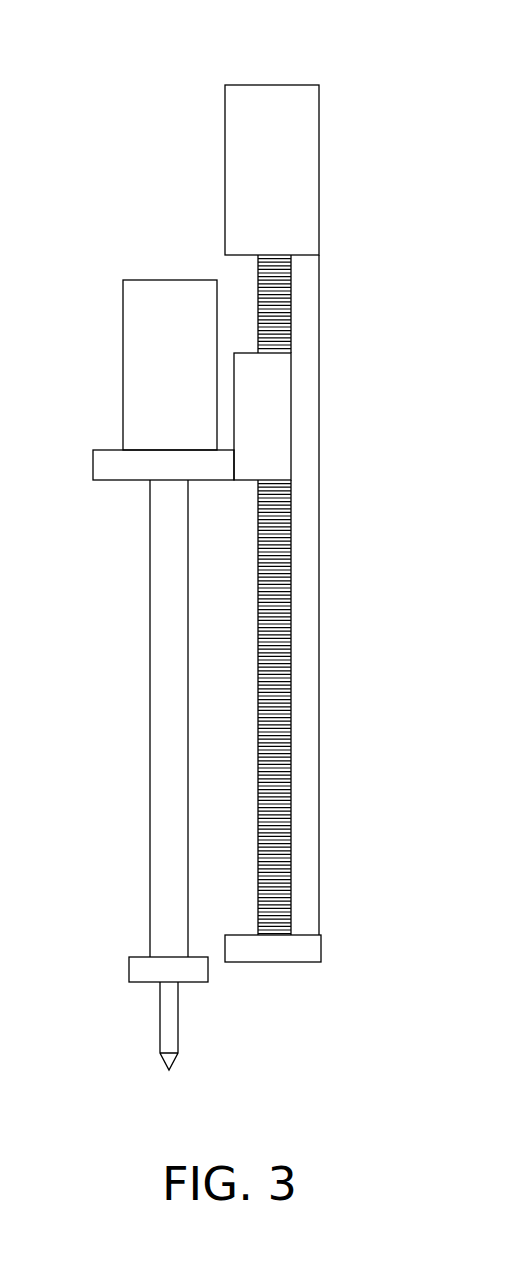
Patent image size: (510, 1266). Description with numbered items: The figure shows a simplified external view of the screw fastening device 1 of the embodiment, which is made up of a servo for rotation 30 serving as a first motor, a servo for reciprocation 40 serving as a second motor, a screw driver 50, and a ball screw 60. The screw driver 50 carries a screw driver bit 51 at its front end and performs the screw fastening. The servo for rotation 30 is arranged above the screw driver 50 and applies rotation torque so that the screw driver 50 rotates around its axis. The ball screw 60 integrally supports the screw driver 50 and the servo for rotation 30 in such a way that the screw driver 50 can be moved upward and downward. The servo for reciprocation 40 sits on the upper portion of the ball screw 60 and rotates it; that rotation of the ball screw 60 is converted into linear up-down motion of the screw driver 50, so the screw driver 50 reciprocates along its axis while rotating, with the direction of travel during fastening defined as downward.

The screw fastening device 1 is at (68, 88).
The servo for rotation 30 is at (132, 362).
The servo for reciprocation 40 is at (312, 152).
The screw driver 50 is at (158, 628).
The screw driver bit 51 is at (168, 1033).
The ball screw 60 is at (291, 590).